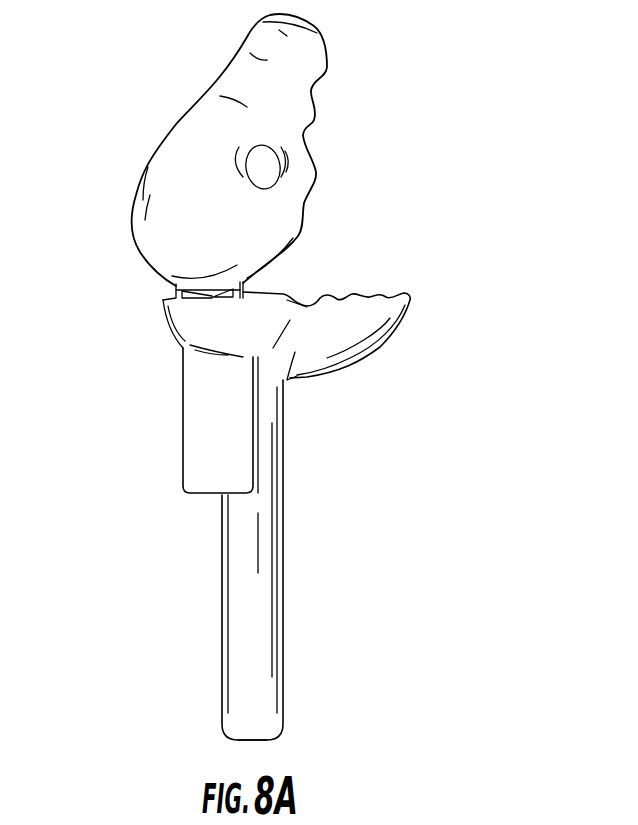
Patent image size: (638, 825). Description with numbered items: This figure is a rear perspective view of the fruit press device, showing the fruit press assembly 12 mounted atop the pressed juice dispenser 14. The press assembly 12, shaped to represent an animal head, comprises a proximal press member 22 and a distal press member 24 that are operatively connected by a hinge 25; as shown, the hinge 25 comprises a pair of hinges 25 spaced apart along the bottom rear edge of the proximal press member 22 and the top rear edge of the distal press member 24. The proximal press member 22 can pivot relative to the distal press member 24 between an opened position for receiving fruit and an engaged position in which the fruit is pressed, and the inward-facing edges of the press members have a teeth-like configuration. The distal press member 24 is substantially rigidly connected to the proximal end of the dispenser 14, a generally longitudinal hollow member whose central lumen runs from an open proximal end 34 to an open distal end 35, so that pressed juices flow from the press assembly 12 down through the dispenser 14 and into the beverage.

The fruit press assembly 12 is at (382, 79).
The proximal press member 22 is at (173, 127).
The hinge 25 is at (175, 293).
The distal press member 24 is at (350, 338).
The open proximal end 34 is at (283, 382).
The pressed juice dispenser 14 is at (237, 572).
The open distal end 35 is at (270, 737).